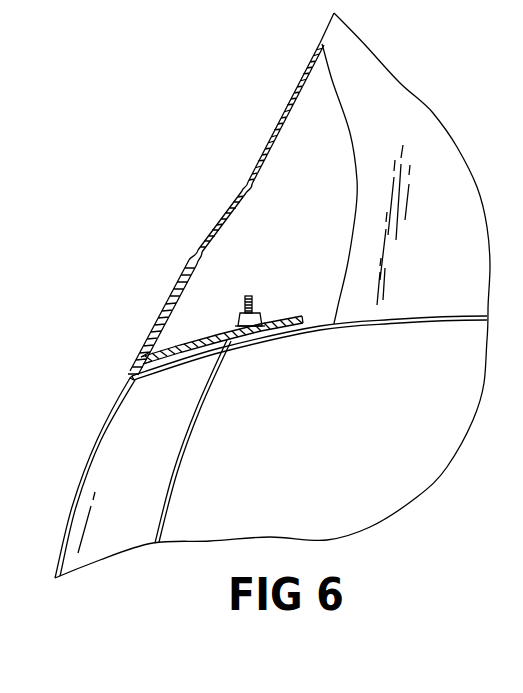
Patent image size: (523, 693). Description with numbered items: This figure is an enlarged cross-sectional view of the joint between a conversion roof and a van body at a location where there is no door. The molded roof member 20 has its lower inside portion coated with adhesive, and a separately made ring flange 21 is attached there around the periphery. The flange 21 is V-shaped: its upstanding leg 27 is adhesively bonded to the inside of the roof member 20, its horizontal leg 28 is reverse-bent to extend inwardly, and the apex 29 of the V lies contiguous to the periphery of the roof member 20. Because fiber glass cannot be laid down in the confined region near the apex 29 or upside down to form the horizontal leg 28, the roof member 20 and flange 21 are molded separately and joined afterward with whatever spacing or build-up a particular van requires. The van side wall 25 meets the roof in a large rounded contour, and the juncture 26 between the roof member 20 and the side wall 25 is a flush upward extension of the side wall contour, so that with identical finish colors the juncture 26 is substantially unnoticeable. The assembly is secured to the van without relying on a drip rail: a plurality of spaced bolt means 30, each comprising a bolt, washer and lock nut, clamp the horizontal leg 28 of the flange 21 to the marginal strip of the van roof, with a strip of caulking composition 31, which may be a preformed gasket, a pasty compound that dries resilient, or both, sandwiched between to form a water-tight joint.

The roof member 20 is at (249, 186).
The ring flange 21 is at (172, 310).
The side wall 25 is at (117, 428).
The juncture 26 is at (132, 376).
The upstanding leg 27 is at (197, 258).
The horizontal leg 28 is at (302, 316).
The apex 29 is at (142, 353).
The bolt means 30 is at (250, 296).
The caulking composition 31 is at (316, 326).